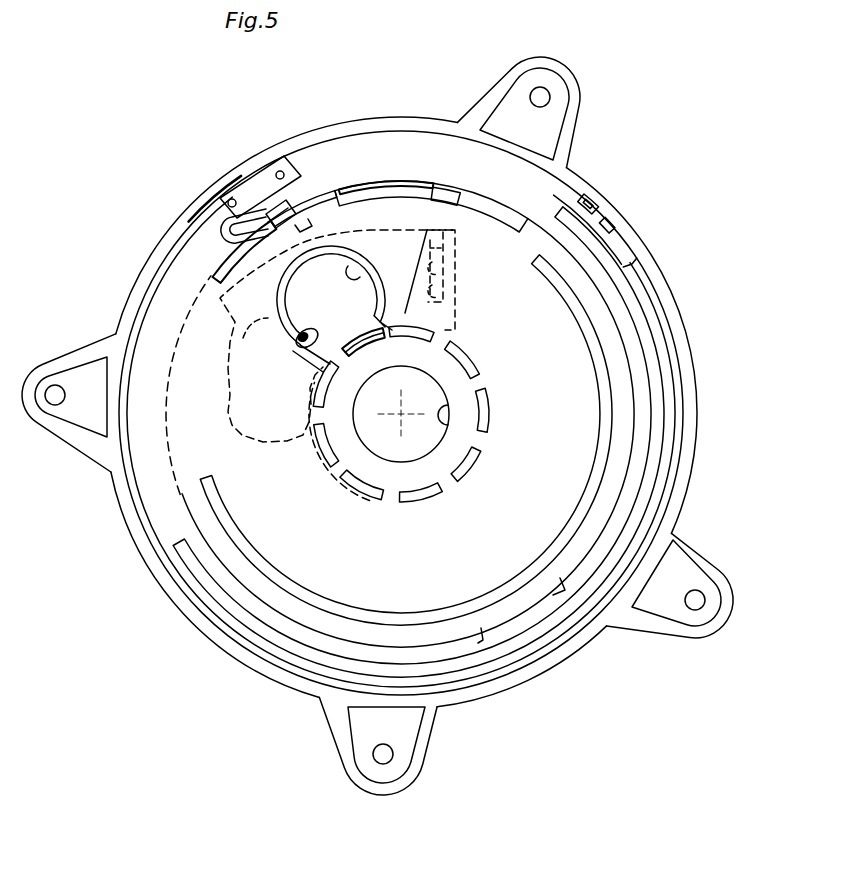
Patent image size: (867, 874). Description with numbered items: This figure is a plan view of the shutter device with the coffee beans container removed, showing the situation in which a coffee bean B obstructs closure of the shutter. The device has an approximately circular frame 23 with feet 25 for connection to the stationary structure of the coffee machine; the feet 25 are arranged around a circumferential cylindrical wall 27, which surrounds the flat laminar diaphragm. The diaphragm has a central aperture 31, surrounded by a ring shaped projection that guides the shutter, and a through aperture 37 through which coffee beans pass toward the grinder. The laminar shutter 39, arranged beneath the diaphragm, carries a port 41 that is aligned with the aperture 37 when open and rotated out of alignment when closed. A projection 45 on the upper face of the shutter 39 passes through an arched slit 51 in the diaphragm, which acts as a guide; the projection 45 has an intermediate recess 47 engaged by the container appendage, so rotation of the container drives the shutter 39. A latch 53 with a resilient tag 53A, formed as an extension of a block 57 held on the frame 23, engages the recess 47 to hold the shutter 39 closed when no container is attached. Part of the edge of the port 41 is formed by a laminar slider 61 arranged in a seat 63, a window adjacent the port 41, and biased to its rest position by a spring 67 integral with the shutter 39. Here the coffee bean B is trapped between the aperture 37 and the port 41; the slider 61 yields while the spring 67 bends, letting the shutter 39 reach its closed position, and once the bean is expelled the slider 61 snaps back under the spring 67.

The frame 23 is at (246, 688).
The feet 25 is at (557, 101).
The circumferential cylindrical wall 27 is at (178, 600).
The central aperture 31 is at (447, 423).
The through aperture 37 is at (373, 272).
The shutter 39 is at (430, 193).
The port 41 is at (297, 318).
The coffee bean B is at (307, 333).
The projection 45 is at (317, 203).
The intermediate recess 47 is at (300, 233).
The arched slit 51 is at (487, 204).
The latch 53 is at (245, 219).
The resilient tag 53A is at (276, 214).
The block 57 is at (243, 187).
The laminar slider 61 is at (392, 197).
The seat 63 is at (460, 300).
The spring 67 is at (448, 259).